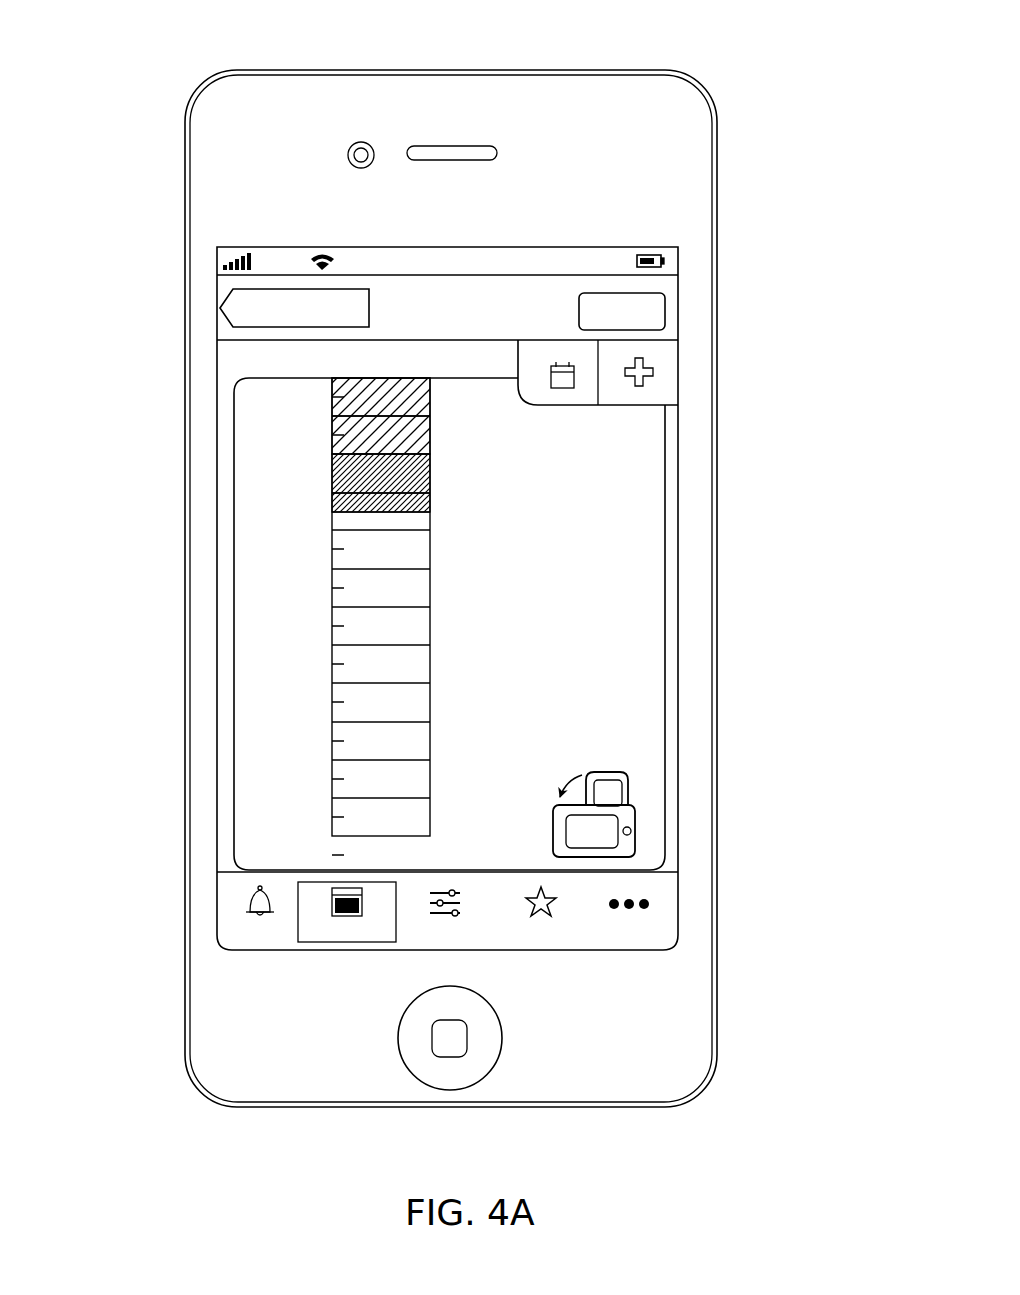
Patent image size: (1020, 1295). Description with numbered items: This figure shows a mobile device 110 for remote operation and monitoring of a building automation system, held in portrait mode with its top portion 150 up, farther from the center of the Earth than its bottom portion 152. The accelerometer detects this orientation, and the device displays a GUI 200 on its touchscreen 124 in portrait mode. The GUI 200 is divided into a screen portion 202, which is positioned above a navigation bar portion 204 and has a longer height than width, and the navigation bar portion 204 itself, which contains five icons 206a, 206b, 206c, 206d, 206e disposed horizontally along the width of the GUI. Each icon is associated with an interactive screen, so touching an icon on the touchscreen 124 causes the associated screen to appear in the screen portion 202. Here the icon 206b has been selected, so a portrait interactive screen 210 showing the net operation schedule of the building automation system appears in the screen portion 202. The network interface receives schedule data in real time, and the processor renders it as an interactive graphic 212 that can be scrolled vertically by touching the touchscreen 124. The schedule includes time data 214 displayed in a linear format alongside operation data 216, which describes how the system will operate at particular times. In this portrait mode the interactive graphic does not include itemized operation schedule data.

The top portion 150 is at (572, 66).
The mobile device 110 is at (718, 150).
The bottom portion 152 is at (578, 1112).
The GUI 200 is at (135, 248).
The touchscreen 124 is at (678, 310).
The screen portion 202 is at (792, 275).
The interactive graphic 212 is at (402, 622).
The portrait interactive screen 210 is at (272, 456).
The time data 214 is at (272, 530).
The operation data 216 is at (612, 445).
The navigation bar portion 204 is at (792, 867).
The icon 206a is at (255, 942).
The icon 206b is at (345, 942).
The icon 206c is at (445, 937).
The icon 206d is at (571, 905).
The icon 206e is at (638, 940).